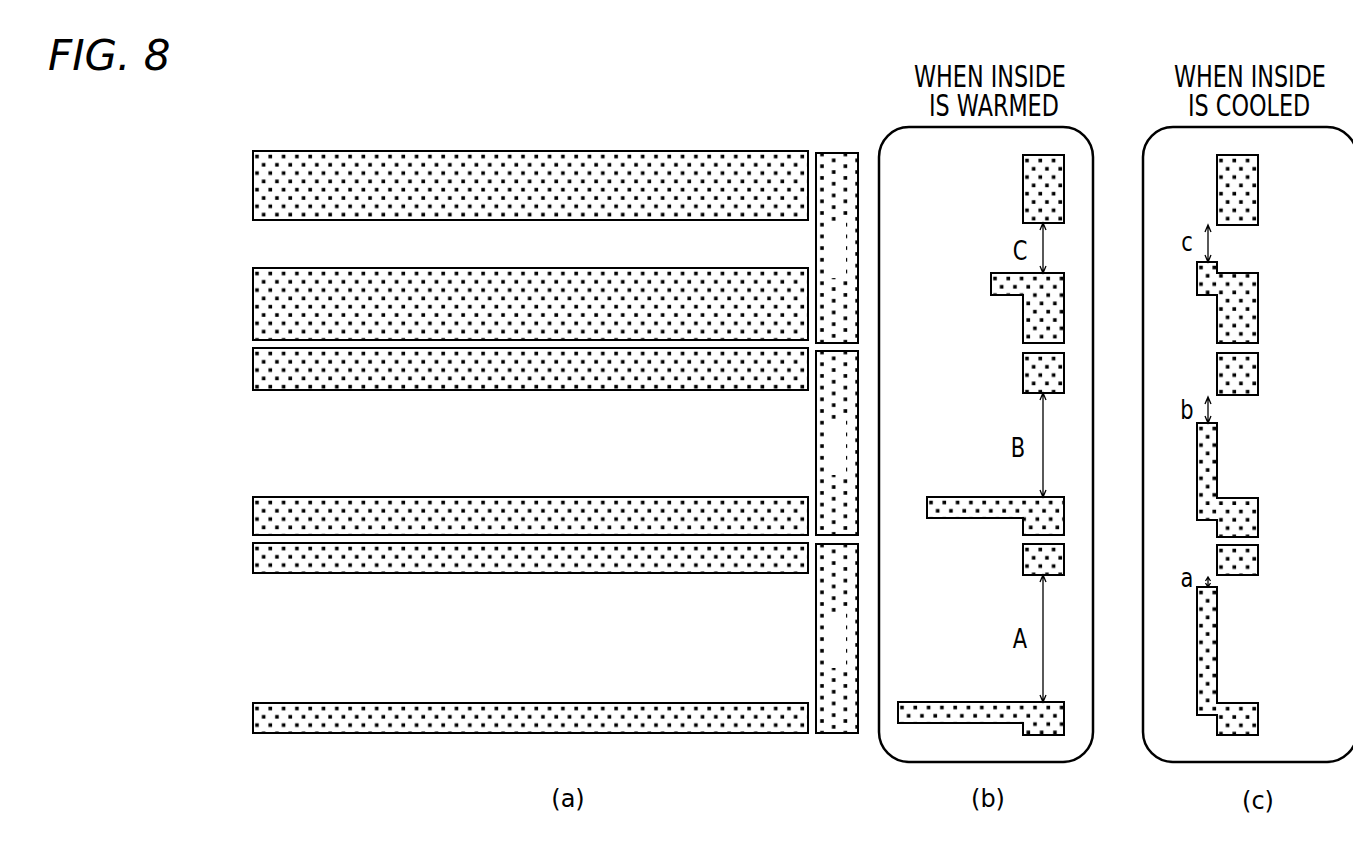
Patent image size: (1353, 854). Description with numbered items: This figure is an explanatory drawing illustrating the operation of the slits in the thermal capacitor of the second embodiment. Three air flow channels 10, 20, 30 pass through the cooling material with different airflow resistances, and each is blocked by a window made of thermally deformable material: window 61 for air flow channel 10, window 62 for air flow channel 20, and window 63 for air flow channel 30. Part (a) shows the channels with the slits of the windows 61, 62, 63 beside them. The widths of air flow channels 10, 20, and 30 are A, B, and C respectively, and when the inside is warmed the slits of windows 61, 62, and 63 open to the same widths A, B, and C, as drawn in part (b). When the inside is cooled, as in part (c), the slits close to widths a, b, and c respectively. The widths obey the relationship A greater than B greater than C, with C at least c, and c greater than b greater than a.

The air flow channel 10 is at (275, 650).
The air flow channel 20 is at (278, 460).
The air flow channel 30 is at (278, 241).
The window 61 is at (818, 648).
The window 62 is at (818, 470).
The window 63 is at (818, 268).